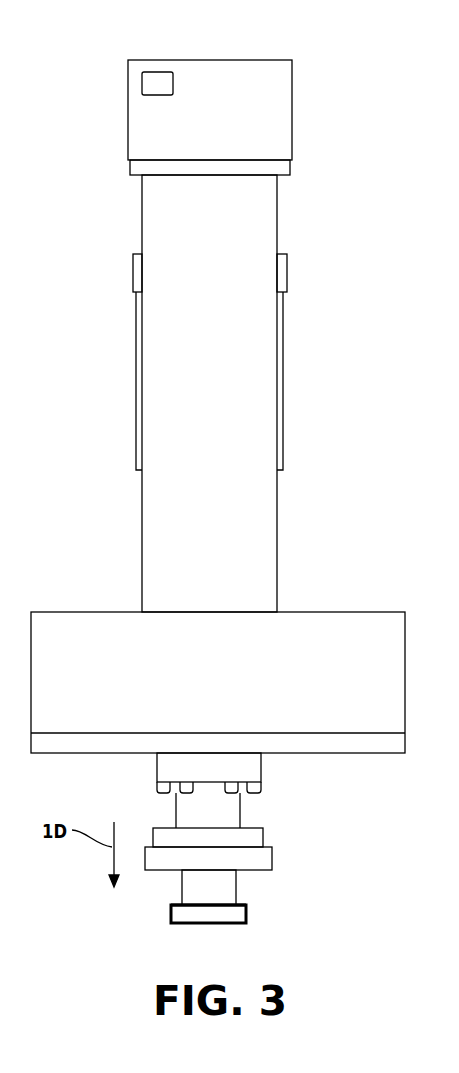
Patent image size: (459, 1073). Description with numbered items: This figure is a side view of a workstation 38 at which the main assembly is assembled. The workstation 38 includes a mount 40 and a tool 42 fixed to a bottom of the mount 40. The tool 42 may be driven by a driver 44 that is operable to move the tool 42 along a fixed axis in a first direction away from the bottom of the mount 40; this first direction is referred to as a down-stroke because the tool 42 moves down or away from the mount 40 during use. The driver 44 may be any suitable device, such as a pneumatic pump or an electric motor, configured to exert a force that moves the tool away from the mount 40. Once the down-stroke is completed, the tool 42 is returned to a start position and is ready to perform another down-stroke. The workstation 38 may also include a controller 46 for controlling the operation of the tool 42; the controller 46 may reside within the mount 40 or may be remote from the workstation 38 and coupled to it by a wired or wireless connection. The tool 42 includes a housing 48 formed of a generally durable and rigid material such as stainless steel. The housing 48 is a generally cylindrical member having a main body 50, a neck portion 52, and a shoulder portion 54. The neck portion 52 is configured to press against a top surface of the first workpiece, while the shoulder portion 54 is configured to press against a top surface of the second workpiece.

The workstation 38 is at (333, 413).
The mount 40 is at (265, 223).
The tool 42 is at (262, 905).
The driver 44 is at (283, 113).
The controller 46 is at (157, 72).
The housing 48 is at (181, 888).
The main body 50 is at (235, 885).
The neck portion 52 is at (228, 924).
The shoulder portion 54 is at (172, 910).